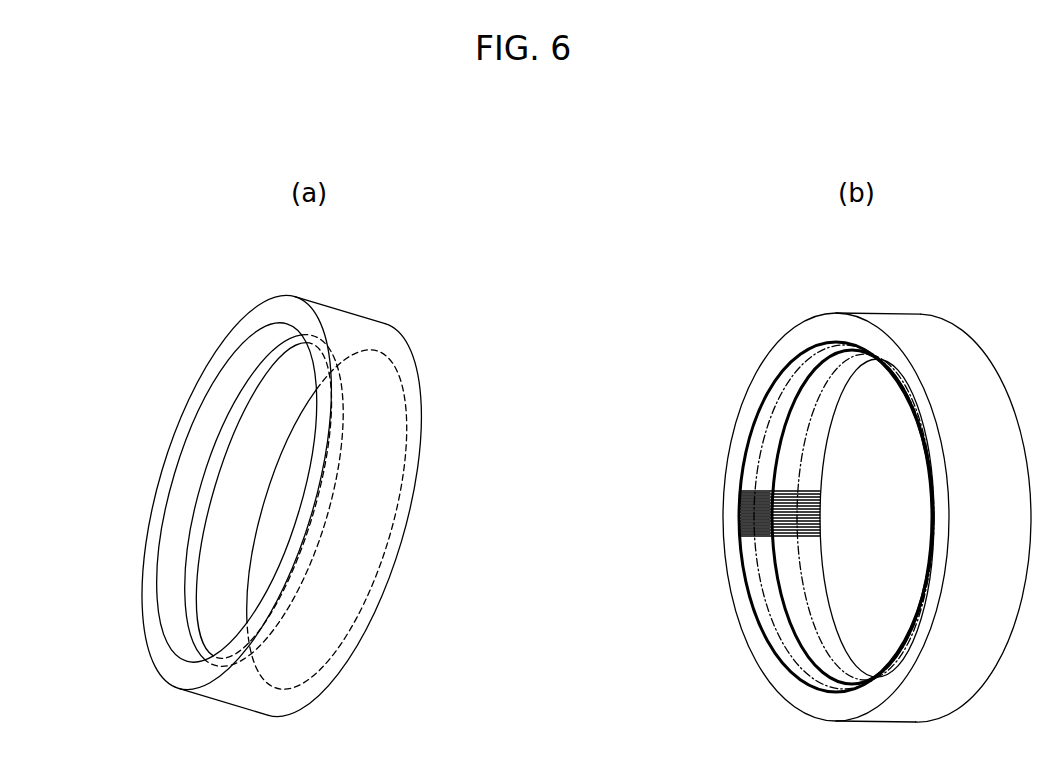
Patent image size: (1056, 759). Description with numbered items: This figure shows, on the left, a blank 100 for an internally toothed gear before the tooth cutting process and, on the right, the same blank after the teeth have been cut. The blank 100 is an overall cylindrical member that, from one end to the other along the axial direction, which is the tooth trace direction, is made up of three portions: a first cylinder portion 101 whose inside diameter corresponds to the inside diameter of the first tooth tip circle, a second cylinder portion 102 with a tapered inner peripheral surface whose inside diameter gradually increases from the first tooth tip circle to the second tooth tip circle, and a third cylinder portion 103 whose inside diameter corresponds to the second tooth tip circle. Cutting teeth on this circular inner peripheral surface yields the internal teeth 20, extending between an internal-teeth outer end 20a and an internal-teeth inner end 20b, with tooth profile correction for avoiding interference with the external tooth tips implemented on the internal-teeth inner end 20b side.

The blank 100 is at (248, 480).
The first cylinder portion 101 is at (220, 540).
The second cylinder portion 102 is at (212, 477).
The third cylinder portion 103 is at (200, 442).
The internal teeth 20 is at (820, 517).
The internal-teeth outer end 20a is at (790, 524).
The internal-teeth inner end 20b is at (740, 510).